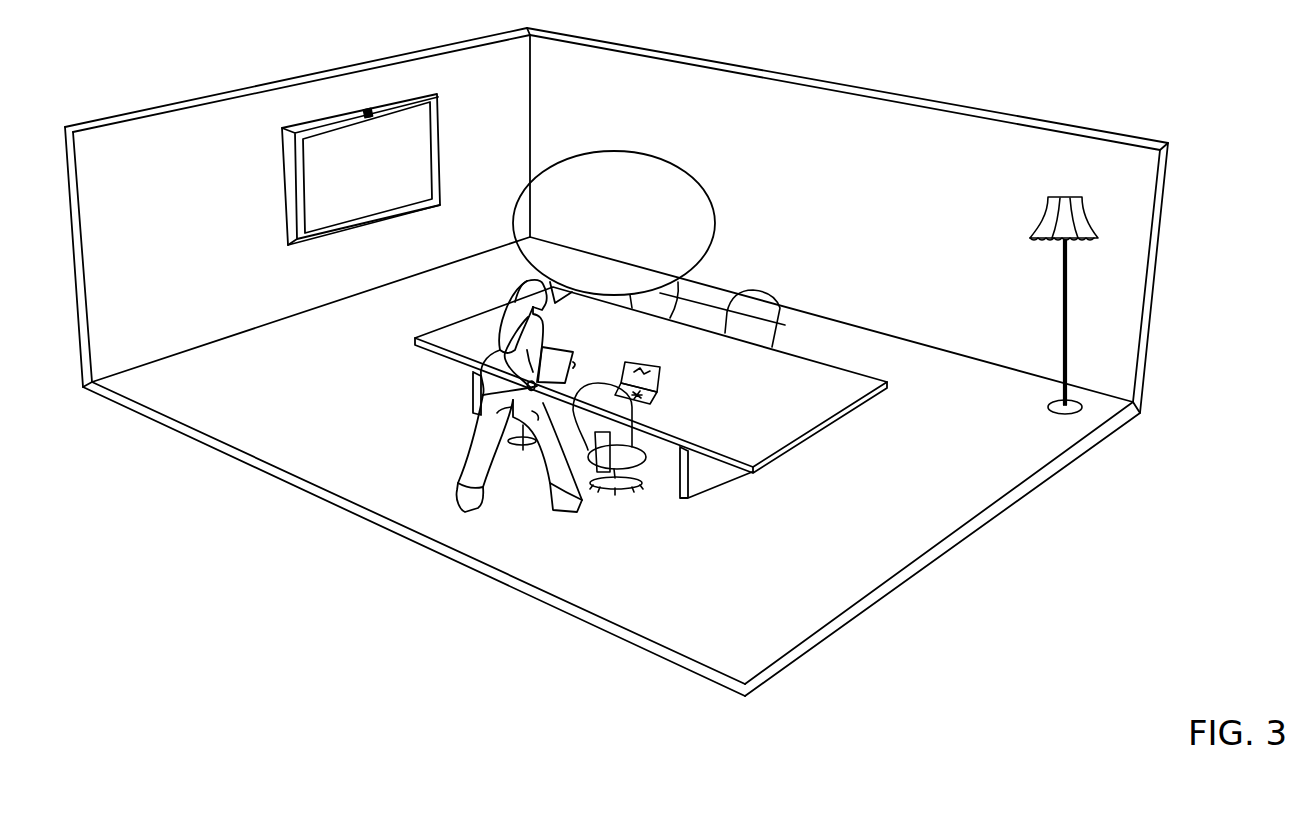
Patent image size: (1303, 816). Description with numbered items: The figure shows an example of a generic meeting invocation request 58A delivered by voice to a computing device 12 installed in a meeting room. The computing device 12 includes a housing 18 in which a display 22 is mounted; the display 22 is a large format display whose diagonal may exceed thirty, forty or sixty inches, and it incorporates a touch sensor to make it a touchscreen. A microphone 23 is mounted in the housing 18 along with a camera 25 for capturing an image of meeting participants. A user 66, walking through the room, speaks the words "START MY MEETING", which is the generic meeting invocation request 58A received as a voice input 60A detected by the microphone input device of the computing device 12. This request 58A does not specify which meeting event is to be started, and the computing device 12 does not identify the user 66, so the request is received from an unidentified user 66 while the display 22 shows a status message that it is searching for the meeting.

The computing device 12 is at (438, 86).
The housing 18 is at (282, 168).
The display 22 is at (366, 177).
The microphone 23 is at (365, 111).
The camera 25 is at (371, 110).
The voice input 60A is at (681, 164).
The generic meeting invocation request 58A is at (670, 228).
The user 66 is at (485, 446).